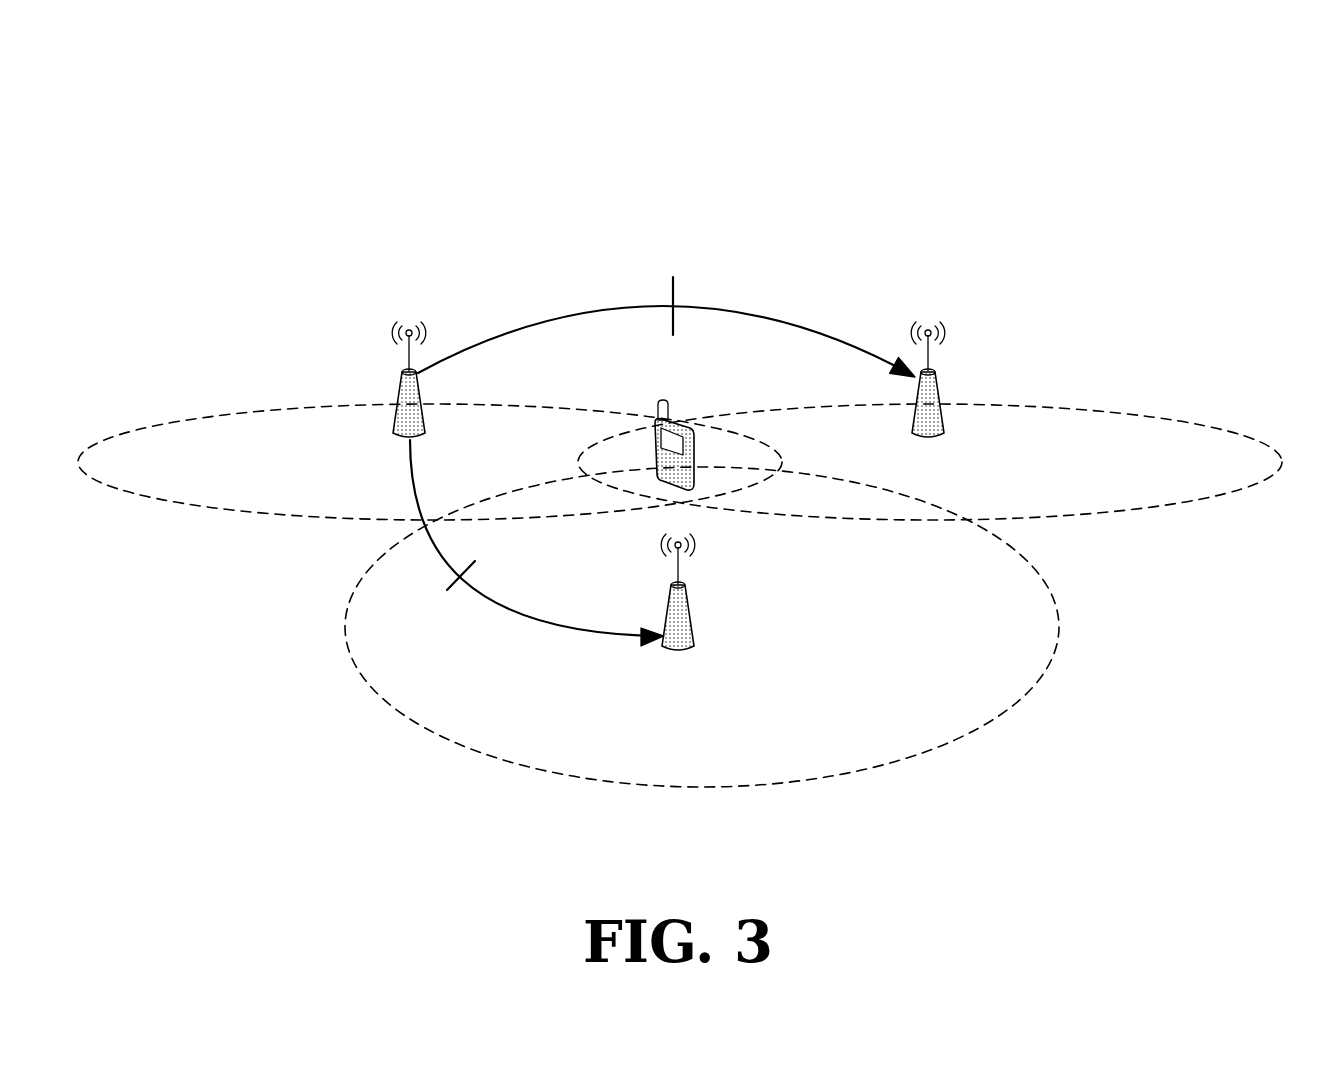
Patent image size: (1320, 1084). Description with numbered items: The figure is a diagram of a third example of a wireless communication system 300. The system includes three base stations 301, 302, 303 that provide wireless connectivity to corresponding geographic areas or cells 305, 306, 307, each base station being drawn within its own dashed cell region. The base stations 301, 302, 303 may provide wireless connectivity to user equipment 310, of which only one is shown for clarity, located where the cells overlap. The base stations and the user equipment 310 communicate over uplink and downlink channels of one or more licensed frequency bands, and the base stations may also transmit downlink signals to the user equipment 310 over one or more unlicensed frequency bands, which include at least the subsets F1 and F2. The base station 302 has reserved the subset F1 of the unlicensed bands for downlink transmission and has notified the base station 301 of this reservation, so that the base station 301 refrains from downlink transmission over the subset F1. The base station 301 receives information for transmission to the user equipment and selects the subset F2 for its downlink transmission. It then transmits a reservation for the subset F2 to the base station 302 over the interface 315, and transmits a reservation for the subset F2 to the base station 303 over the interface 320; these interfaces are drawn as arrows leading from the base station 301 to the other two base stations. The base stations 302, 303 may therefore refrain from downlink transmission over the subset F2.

The wireless communication system 300 is at (1194, 161).
The base station 301 is at (395, 397).
The base station 302 is at (943, 397).
The base station 303 is at (695, 617).
The cell 305 is at (208, 505).
The cell 306 is at (1108, 512).
The cell 307 is at (789, 785).
The user equipment 310 is at (698, 452).
The interface 315 is at (668, 290).
The interface 320 is at (462, 588).